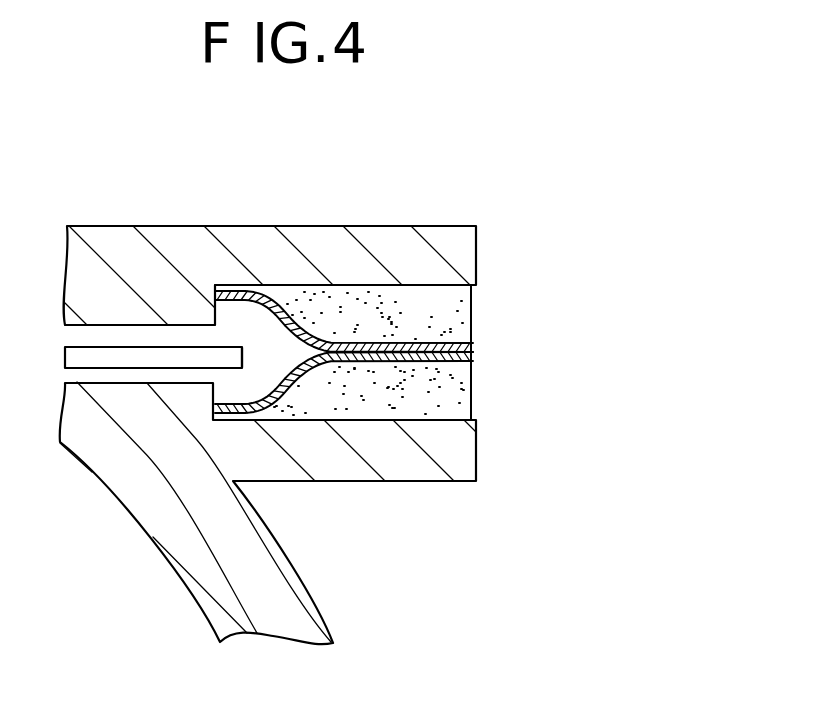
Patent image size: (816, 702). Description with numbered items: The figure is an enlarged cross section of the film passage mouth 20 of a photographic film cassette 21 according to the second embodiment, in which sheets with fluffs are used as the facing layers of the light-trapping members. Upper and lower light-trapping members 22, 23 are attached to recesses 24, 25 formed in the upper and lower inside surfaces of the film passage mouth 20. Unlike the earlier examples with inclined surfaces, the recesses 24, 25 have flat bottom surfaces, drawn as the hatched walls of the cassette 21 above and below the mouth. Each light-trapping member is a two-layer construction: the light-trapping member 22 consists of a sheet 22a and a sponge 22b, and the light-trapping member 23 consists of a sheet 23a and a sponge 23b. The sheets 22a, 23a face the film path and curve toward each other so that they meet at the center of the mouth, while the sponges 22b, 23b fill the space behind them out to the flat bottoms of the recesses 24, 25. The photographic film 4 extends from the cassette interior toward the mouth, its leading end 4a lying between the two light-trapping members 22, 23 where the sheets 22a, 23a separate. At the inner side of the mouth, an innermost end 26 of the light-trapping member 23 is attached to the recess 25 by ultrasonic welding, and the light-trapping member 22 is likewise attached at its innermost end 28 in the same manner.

The photographic film 4 is at (52, 346).
The leading end 4a is at (220, 357).
The film passage mouth 20 is at (483, 296).
The photographic film cassette 21 is at (118, 214).
The light-trapping member 22 is at (615, 266).
The sheet 22a is at (471, 345).
The sponge 22b is at (462, 325).
The light-trapping member 23 is at (615, 374).
The sheet 23a is at (471, 359).
The sponge 23b is at (471, 398).
The recess 24 is at (363, 285).
The recess 25 is at (417, 423).
The innermost end 26 is at (240, 420).
The innermost end 28 is at (231, 290).